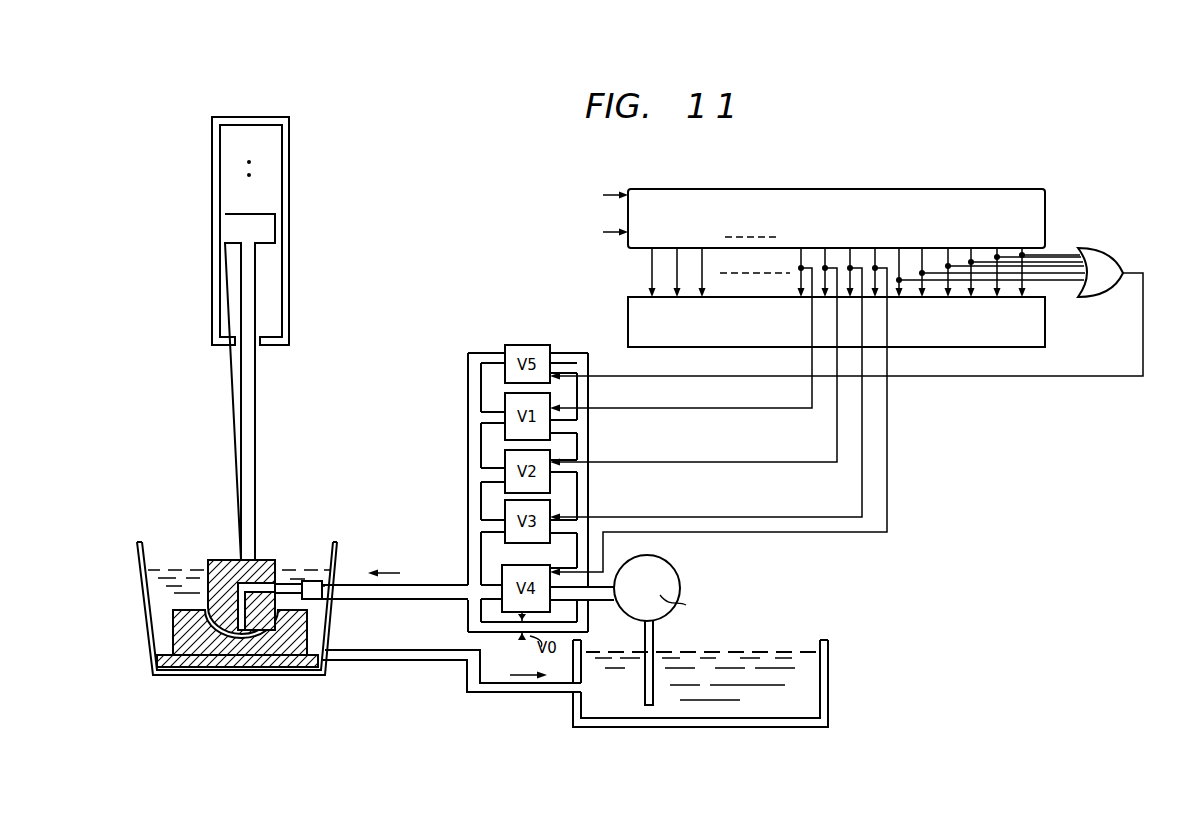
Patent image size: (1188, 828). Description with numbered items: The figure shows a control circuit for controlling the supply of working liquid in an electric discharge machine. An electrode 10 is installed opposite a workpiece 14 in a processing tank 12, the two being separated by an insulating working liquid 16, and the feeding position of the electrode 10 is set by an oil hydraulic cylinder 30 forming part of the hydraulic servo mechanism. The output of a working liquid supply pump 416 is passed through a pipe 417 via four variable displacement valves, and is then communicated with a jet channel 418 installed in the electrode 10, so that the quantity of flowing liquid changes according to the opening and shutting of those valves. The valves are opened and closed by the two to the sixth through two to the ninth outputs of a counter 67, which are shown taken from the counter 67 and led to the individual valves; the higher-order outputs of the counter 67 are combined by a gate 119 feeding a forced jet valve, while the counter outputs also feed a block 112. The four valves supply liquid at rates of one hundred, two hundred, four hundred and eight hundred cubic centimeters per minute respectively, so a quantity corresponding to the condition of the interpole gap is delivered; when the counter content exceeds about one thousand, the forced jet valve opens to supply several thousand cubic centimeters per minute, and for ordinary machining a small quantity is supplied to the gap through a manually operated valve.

The oil hydraulic cylinder 30 is at (240, 117).
The electrode 10 is at (223, 568).
The jet channel 418 is at (263, 587).
The insulating working liquid 16 is at (172, 578).
The processing tank 12 is at (337, 548).
The workpiece 14 is at (297, 631).
The pipe 417 is at (432, 585).
The working liquid supply pump 416 is at (673, 566).
The counter 67 is at (988, 189).
The register 112 is at (1045, 333).
The OR gate 119 is at (1113, 249).